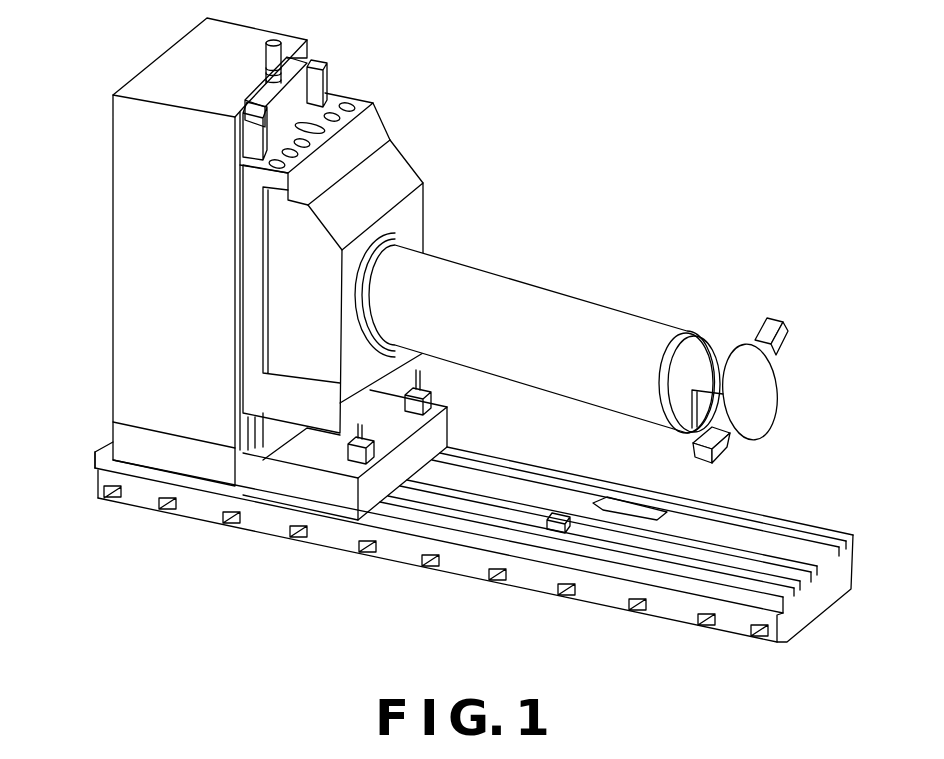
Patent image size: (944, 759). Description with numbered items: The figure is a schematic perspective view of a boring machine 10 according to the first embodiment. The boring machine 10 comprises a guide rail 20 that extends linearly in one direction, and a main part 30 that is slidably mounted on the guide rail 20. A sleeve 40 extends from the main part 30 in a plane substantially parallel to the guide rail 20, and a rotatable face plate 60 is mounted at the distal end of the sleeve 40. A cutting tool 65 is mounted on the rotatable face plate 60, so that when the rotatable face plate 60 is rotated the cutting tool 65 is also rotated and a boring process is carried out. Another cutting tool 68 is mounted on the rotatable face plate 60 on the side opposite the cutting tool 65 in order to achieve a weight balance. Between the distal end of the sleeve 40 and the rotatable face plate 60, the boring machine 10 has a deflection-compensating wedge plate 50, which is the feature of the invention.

The boring machine 10 is at (153, 53).
The guide rail 20 is at (520, 597).
The main part 30 is at (98, 288).
The sleeve 40 is at (547, 310).
The deflection-compensating wedge plate 50 is at (675, 373).
The rotatable face plate 60 is at (753, 385).
The cutting tool 65 is at (772, 330).
The cutting tool 68 is at (722, 453).